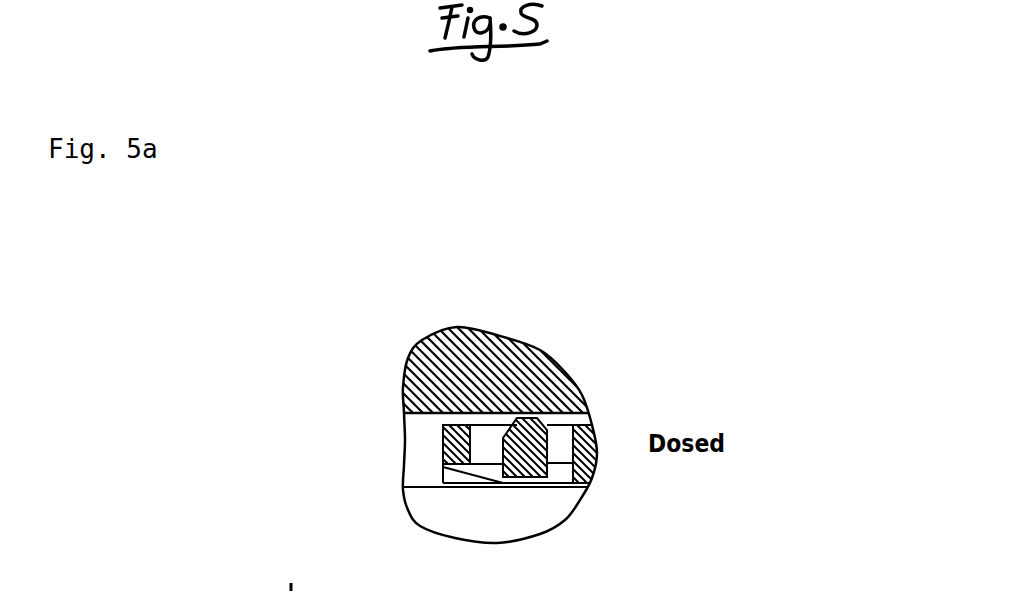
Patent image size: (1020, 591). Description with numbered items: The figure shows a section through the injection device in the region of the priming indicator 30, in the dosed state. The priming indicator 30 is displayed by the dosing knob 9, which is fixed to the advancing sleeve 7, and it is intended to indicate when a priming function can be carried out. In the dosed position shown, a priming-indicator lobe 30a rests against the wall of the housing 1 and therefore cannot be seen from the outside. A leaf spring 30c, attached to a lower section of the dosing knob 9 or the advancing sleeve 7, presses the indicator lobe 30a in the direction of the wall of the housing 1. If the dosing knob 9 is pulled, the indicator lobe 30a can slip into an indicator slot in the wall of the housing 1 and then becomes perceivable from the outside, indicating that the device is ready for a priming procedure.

The housing 1 is at (500, 370).
The priming indicator 30 is at (578, 302).
The priming-indicator lobe 30a is at (500, 477).
The leaf spring 30c is at (557, 472).
The advancing sleeve 7 is at (661, 490).
The dosing knob 9 is at (593, 452).